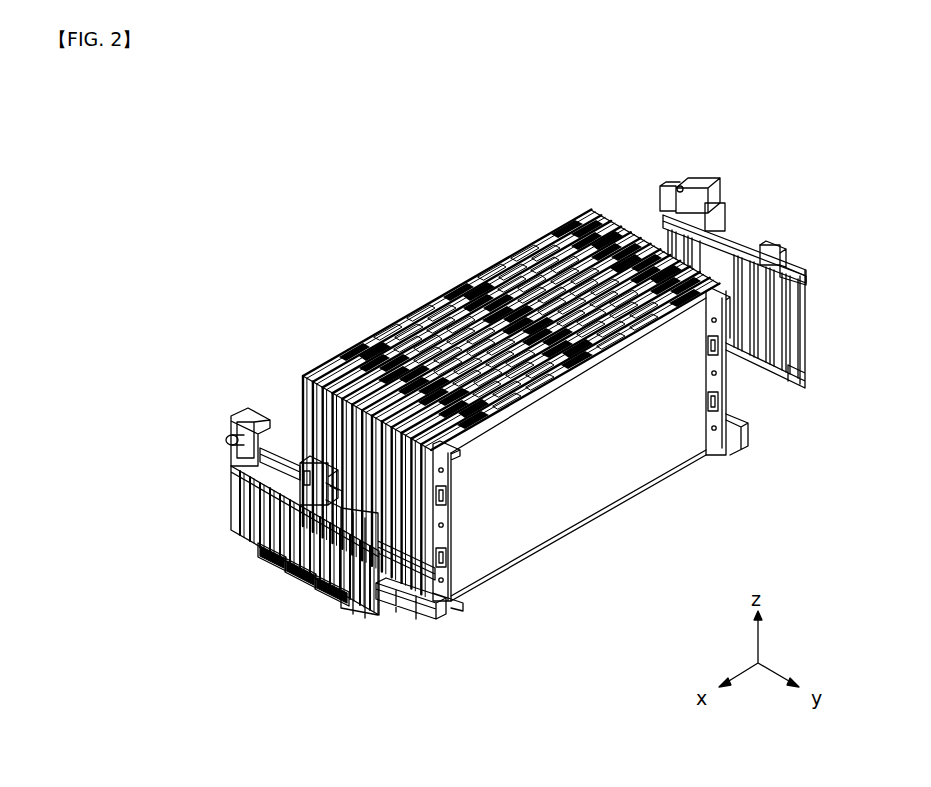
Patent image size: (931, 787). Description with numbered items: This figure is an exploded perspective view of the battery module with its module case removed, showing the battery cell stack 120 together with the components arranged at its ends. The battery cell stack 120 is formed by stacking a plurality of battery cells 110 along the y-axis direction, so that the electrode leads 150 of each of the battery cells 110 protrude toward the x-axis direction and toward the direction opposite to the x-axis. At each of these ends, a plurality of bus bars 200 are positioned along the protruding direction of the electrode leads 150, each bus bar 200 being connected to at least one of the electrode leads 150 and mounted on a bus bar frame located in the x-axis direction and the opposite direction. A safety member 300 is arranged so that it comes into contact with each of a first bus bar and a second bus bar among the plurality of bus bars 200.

The battery cell 110 is at (427, 469).
The battery cell stack 120 is at (426, 278).
The electrode lead 150 is at (437, 572).
The bus bar 200 is at (300, 483).
The safety member 300 is at (320, 587).